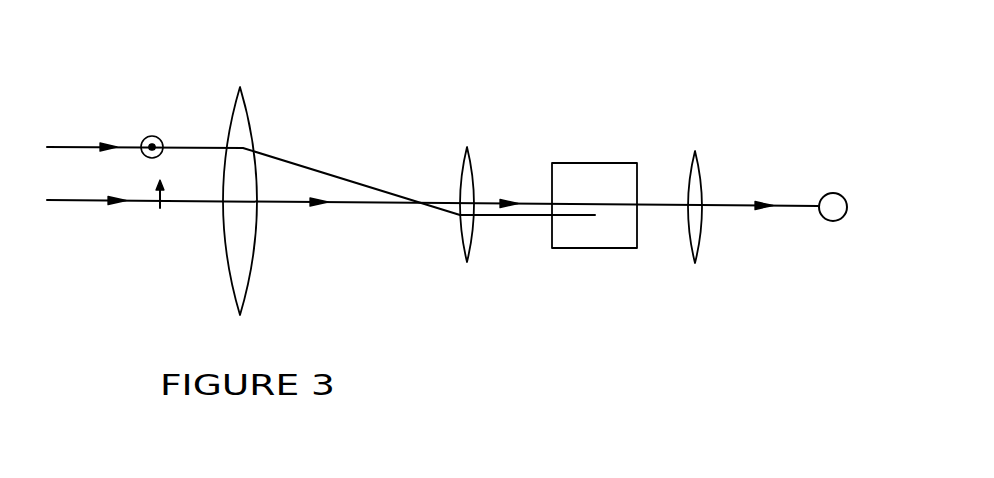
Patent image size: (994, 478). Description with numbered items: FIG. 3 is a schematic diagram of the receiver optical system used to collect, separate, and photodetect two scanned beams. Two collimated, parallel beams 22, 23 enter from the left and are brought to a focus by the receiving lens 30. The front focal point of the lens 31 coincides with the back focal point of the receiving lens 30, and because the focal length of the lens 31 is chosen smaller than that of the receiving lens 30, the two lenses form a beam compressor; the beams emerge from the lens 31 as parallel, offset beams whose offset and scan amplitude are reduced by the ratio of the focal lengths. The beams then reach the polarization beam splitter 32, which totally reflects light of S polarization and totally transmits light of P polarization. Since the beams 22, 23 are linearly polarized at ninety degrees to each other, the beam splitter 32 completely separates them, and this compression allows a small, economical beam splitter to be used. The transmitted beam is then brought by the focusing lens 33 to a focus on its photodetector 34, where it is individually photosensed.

The scanned beam 22 is at (65, 147).
The scanned beam 23 is at (65, 200).
The receiving lens 30 is at (233, 98).
The lens 31 is at (462, 165).
The polarization beam splitter 32 is at (572, 163).
The focusing lens 33 is at (689, 168).
The photodetector 34 is at (832, 194).